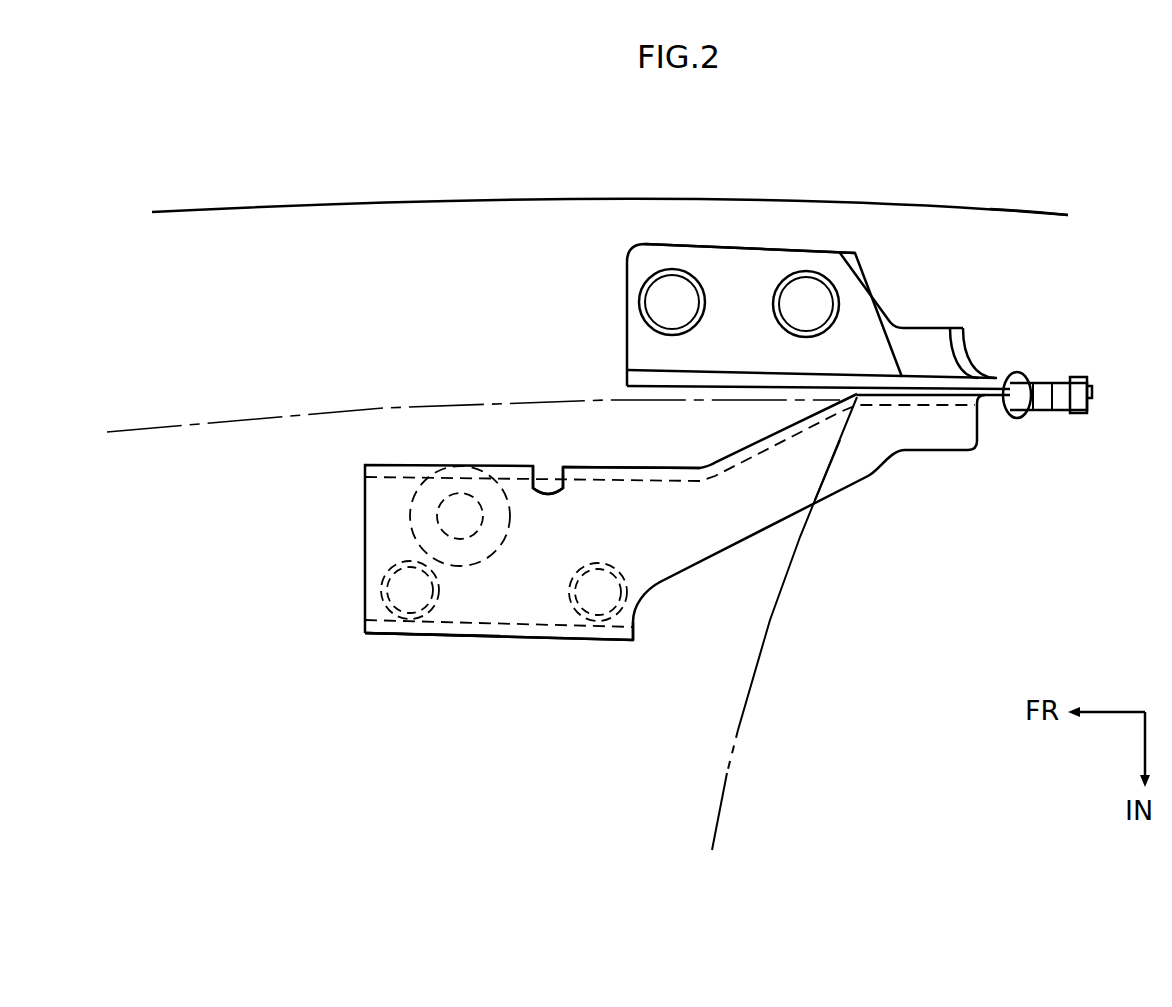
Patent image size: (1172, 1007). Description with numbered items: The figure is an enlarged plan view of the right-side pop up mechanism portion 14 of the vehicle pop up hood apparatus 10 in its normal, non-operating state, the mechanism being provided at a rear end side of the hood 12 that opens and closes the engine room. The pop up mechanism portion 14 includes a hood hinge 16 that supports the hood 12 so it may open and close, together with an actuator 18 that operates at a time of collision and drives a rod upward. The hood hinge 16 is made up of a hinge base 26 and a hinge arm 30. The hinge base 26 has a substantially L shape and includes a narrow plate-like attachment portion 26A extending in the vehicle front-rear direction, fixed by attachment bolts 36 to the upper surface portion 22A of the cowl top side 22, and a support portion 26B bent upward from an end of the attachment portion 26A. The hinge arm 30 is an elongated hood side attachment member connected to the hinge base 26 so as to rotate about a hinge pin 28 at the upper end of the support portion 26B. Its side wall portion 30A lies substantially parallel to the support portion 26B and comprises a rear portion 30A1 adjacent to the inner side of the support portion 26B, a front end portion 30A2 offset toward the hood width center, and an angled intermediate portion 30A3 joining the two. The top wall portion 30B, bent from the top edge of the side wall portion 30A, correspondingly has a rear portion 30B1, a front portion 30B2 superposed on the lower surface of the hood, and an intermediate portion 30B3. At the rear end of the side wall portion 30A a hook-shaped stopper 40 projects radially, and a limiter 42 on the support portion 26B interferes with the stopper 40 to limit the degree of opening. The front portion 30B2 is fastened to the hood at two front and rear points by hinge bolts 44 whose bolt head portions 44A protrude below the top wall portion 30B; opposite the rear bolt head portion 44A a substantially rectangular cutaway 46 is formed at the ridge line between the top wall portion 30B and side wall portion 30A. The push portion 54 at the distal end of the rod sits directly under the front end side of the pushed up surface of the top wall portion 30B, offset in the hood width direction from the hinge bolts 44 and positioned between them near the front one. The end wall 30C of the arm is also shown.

The vehicle pop up hood apparatus 10 is at (320, 633).
The hood 12 is at (762, 648).
The pop up mechanism portion 14 is at (362, 654).
The hood hinge 16 is at (854, 527).
The actuator 18 is at (410, 513).
The cowl top side 22 is at (897, 198).
The upper surface portion 22A is at (1003, 223).
The hinge base 26 is at (776, 267).
The attachment portion 26A is at (738, 257).
The support portion 26B is at (912, 386).
The hinge pin 28 is at (1017, 372).
The hinge arm 30 is at (679, 565).
The side wall portion 30A is at (823, 526).
The rear portion 30A1 is at (950, 407).
The front end portion 30A2 is at (618, 467).
The intermediate portion 30A3 is at (760, 446).
The top wall portion 30B is at (815, 508).
The rear portion 30B1 is at (935, 432).
The front portion 30B2 is at (527, 588).
The intermediate portion 30B3 is at (760, 522).
The bracket end wall 30C is at (583, 635).
The attachment bolt 36 is at (672, 290).
The stopper 40 is at (1075, 377).
The limiter 42 is at (1094, 391).
The hinge bolt 44 is at (547, 631).
The bolt head portion 44A is at (408, 610).
The cutaway 46 is at (563, 468).
The push portion 54 is at (463, 507).